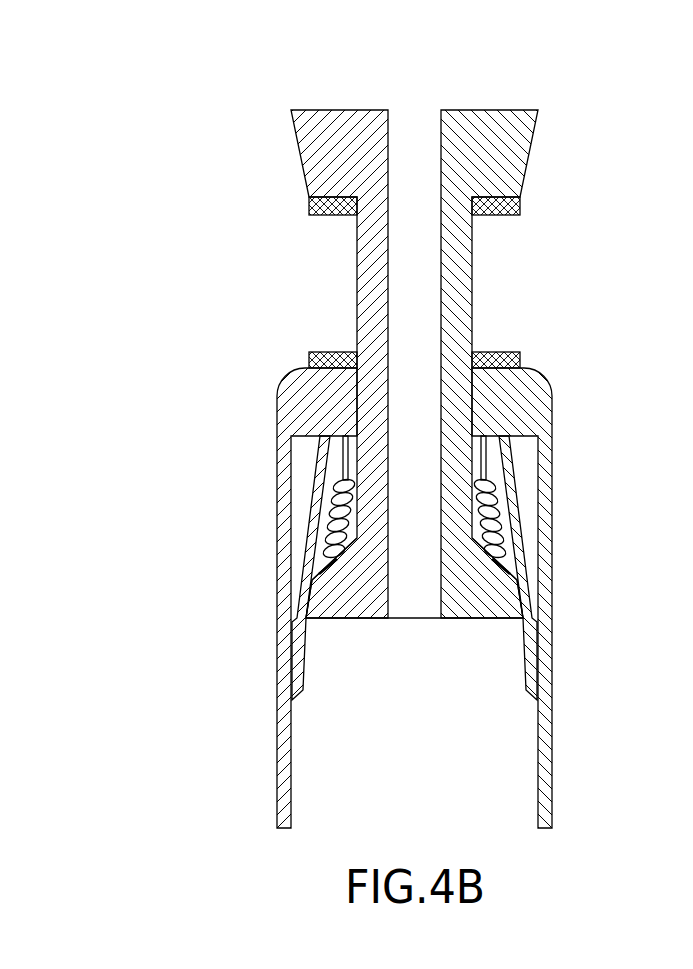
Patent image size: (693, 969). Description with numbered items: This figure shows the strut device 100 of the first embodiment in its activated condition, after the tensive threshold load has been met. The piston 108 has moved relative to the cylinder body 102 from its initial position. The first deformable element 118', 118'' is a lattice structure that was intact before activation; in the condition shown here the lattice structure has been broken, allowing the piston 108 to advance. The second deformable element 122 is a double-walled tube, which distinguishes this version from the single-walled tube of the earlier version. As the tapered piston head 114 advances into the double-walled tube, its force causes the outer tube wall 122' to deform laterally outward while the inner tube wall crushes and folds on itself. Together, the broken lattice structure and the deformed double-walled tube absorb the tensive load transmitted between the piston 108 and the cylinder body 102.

The strut device 100 is at (421, 66).
The piston 108 is at (520, 147).
The piston head 114 is at (508, 610).
The first deformable element 118'' is at (494, 221).
The first deformable element 118' is at (490, 353).
The second deformable element 122 is at (478, 565).
The outer tube wall 122' is at (495, 525).
The cylinder body 102 is at (550, 753).